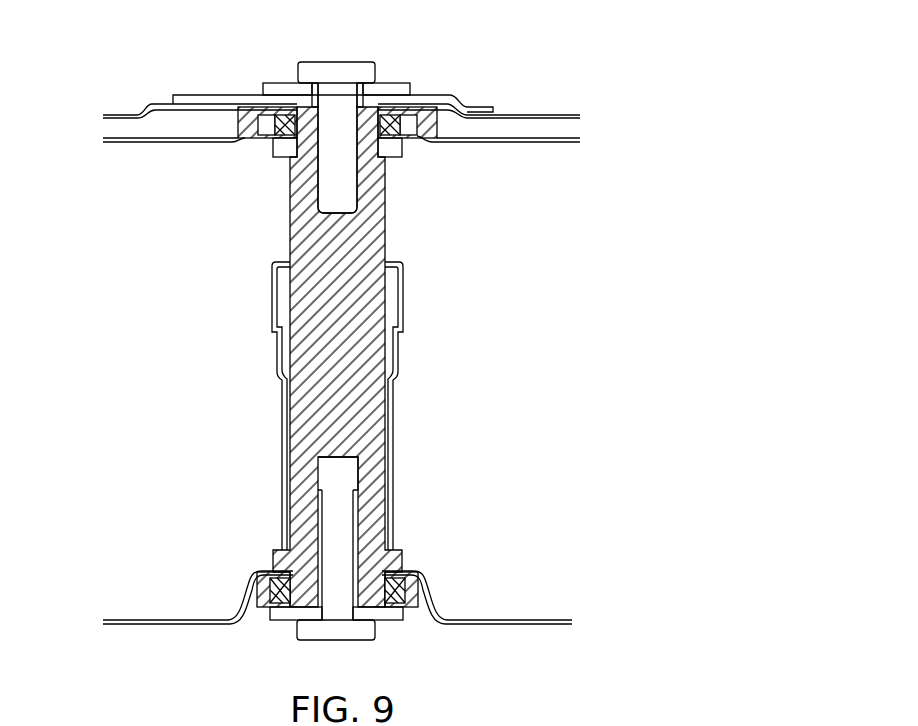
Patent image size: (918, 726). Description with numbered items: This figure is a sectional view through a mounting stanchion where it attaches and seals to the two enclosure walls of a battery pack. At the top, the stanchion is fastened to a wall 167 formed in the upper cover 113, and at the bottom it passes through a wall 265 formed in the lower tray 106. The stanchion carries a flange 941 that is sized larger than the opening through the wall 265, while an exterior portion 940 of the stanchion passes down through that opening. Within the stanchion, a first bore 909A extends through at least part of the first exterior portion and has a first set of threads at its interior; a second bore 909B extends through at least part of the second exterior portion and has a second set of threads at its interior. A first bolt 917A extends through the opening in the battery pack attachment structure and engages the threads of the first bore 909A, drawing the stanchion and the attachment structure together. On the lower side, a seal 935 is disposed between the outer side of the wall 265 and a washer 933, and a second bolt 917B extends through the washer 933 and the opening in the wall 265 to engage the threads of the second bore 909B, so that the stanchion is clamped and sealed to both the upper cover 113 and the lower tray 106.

The first bolt 917A is at (380, 62).
The first bore 909A is at (350, 222).
The second bore 909B is at (352, 470).
The wall 167 is at (150, 143).
The upper cover 113 is at (325, 160).
The lower tray 106 is at (317, 576).
The flange 941 is at (273, 550).
The wall 265 is at (135, 620).
The seal 935 is at (400, 588).
The exterior portion 940 is at (300, 600).
The washer 933 is at (388, 621).
The second bolt 917B is at (325, 640).